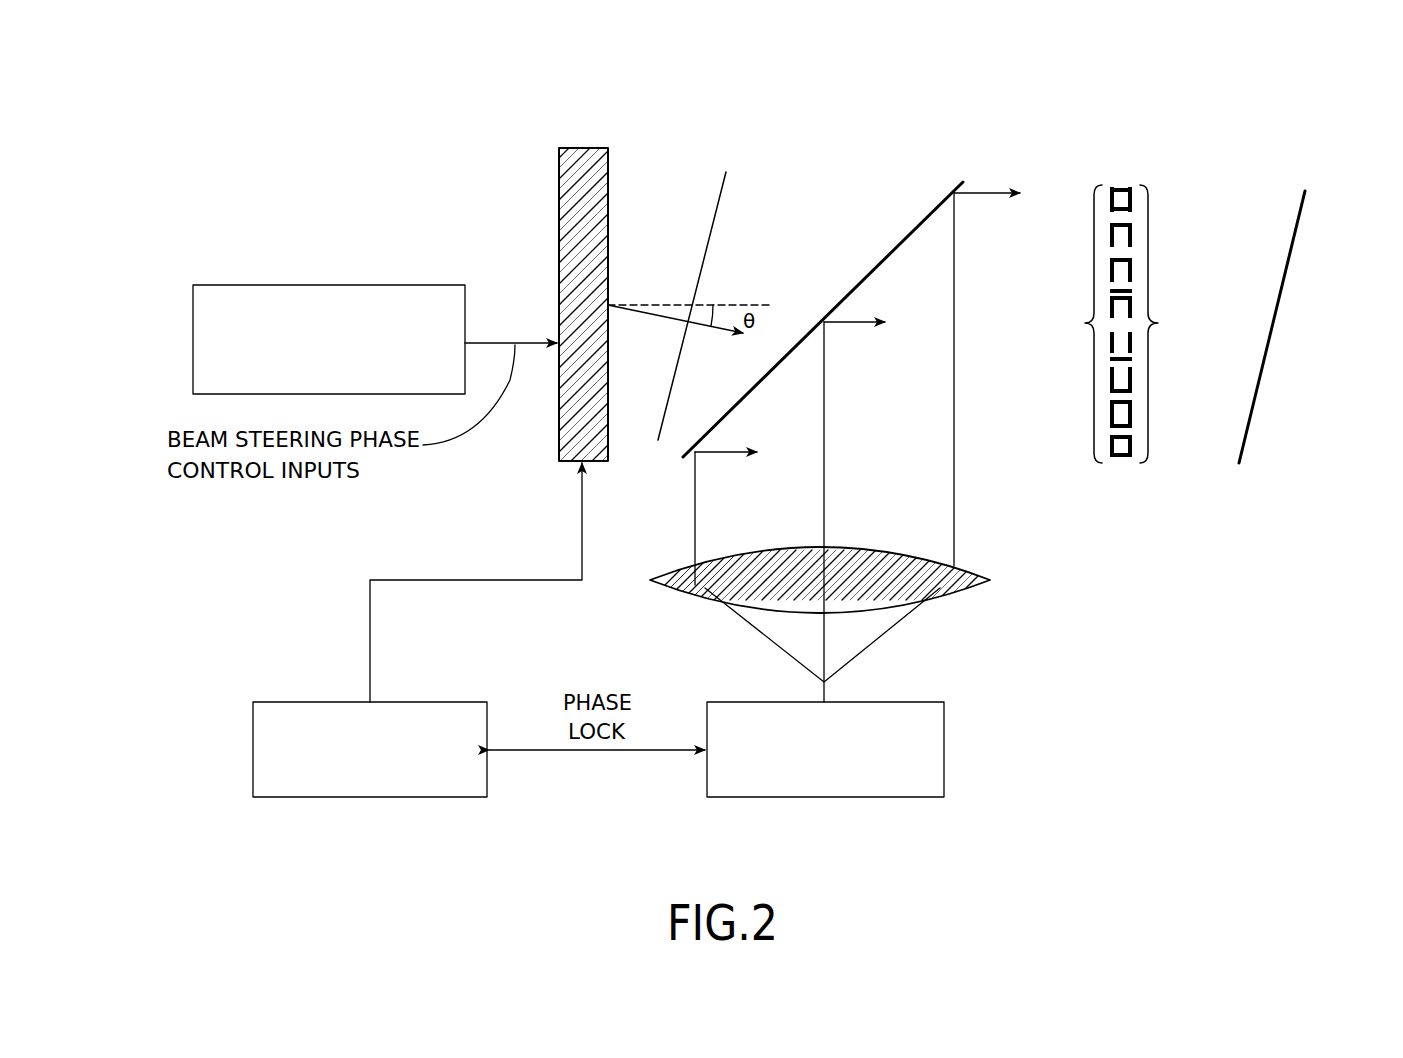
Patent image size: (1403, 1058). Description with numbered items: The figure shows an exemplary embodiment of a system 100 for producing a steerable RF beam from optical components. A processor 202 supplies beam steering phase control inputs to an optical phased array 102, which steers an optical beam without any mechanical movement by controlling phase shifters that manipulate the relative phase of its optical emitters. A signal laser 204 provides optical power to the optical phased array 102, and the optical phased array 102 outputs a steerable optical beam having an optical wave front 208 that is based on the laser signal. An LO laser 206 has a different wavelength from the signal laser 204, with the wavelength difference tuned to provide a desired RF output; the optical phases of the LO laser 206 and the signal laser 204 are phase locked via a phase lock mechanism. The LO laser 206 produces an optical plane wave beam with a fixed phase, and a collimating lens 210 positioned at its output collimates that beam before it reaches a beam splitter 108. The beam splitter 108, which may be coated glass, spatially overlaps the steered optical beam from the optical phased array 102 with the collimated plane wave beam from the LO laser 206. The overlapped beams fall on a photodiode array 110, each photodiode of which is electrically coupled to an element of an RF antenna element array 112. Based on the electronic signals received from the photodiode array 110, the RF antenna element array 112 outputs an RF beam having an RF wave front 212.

The system 100 is at (228, 98).
The optical phased array 102 is at (559, 175).
The beam splitter 108 is at (945, 200).
The photodiode array 110 is at (1087, 324).
The RF antenna element array 112 is at (1169, 324).
The processor 202 is at (329, 339).
The signal laser 204 is at (370, 749).
The LO laser 206 is at (825, 749).
The optical wave front 208 is at (718, 205).
The collimating lens 210 is at (970, 590).
The RF wave front 212 is at (1275, 322).